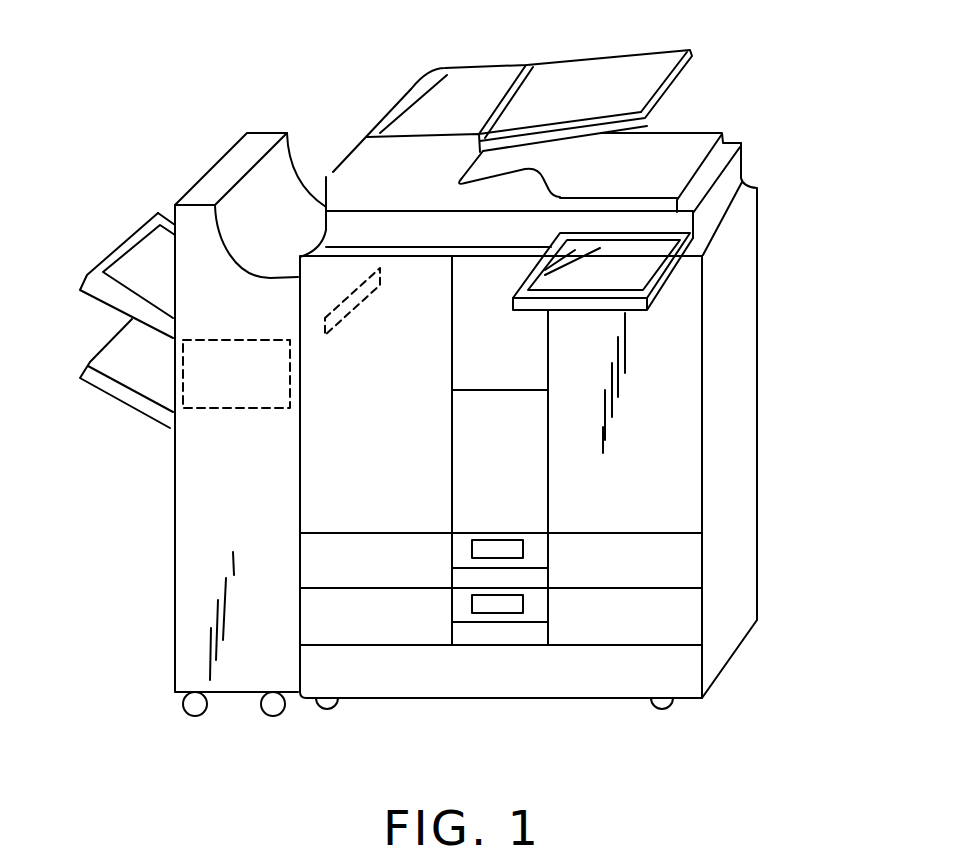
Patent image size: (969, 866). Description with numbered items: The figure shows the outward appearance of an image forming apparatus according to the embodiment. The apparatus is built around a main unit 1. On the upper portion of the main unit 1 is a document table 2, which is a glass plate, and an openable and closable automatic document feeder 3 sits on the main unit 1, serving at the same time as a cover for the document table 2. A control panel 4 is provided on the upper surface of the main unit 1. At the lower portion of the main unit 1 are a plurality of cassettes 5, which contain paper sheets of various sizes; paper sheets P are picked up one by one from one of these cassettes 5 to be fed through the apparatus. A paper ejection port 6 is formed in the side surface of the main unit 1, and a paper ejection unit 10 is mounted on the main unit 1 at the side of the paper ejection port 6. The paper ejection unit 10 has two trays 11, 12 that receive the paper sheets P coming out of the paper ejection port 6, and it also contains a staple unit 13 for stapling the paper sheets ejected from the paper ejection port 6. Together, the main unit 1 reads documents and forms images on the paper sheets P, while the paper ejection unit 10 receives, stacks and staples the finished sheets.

The main unit 1 is at (743, 418).
The document table 2 is at (747, 174).
The automatic document feeder 3 is at (478, 78).
The control panel 4 is at (565, 316).
The cassettes 5 is at (692, 558).
The paper ejection port 6 is at (350, 327).
The paper ejection unit 10 is at (188, 598).
The tray 11 is at (102, 262).
The tray 12 is at (93, 352).
The staple unit 13 is at (233, 410).
The paper sheet P is at (147, 258).